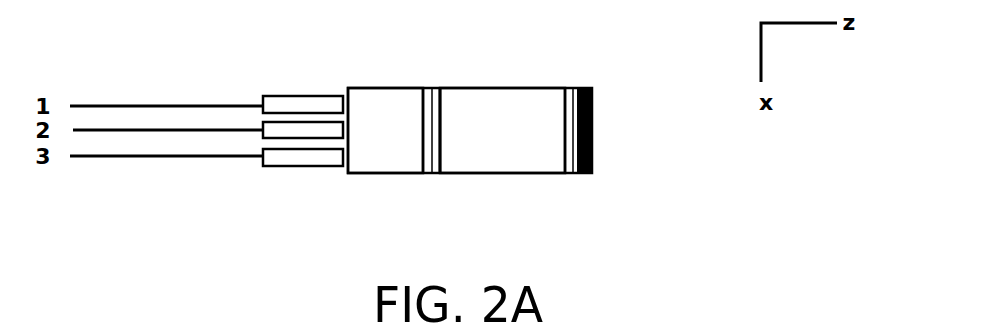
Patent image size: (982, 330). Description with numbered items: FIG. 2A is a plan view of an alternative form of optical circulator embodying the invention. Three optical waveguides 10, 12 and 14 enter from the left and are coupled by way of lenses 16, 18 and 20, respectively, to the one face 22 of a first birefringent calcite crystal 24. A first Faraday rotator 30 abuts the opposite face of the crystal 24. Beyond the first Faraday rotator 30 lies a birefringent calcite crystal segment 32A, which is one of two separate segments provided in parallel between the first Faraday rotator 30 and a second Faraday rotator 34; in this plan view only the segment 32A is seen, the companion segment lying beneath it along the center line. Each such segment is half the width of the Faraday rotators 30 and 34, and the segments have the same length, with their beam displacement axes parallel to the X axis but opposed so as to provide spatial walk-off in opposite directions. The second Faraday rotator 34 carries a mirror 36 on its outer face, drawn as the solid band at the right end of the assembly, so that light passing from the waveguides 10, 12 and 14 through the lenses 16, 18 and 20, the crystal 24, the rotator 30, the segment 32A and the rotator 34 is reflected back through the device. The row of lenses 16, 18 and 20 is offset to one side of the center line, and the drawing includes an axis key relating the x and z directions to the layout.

The optical waveguide 10 is at (118, 103).
The optical waveguide 12 is at (167, 128).
The optical waveguide 14 is at (132, 157).
The lens 16 is at (288, 97).
The lens 18 is at (298, 128).
The lens 20 is at (278, 162).
The one face 22 is at (348, 173).
The first birefringent calcite crystal 24 is at (392, 93).
The first Faraday rotator 30 is at (430, 175).
The birefringent calcite crystal segment 32A is at (482, 107).
The second Faraday rotator 34 is at (572, 175).
The mirror 36 is at (590, 175).